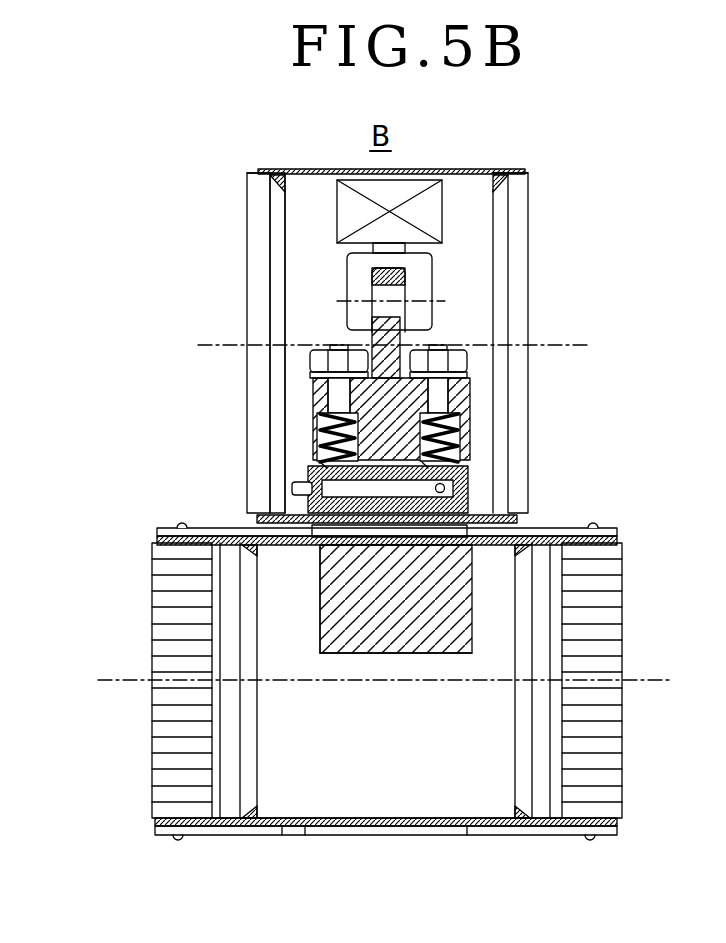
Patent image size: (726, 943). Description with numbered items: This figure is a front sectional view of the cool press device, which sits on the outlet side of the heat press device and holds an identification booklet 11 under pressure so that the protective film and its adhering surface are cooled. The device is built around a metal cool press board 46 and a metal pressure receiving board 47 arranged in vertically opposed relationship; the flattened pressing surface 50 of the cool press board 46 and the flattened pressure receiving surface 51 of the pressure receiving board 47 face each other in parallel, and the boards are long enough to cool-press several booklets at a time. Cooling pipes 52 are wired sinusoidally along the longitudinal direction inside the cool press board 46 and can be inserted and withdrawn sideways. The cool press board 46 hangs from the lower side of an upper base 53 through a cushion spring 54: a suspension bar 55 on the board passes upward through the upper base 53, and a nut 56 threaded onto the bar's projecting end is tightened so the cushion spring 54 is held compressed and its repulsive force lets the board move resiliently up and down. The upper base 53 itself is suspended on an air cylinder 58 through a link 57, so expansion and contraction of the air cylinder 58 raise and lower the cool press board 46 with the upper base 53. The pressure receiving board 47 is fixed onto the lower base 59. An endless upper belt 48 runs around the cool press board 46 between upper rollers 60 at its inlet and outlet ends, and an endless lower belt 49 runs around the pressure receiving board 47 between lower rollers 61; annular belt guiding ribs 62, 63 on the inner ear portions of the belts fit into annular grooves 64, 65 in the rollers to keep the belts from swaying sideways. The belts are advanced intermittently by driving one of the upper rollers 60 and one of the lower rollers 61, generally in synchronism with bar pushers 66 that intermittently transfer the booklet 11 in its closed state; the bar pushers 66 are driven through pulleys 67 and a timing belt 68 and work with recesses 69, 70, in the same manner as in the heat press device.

The identification booklet 11 is at (343, 630).
The cool press board 46 is at (470, 412).
The pressure receiving board 47 is at (418, 595).
The upper belt 48 is at (318, 171).
The lower belt 49 is at (490, 543).
The pressing surface 50 is at (470, 440).
The pressure receiving surface 51 is at (355, 578).
The cooling pipes 52 is at (473, 487).
The upper base 53 is at (335, 378).
The cushion spring 54 is at (322, 462).
The suspension bar 55 is at (322, 415).
The nut 56 is at (313, 352).
The link 57 is at (340, 290).
The air cylinder 58 is at (388, 242).
The lower base 59 is at (448, 642).
The upper rollers 60 is at (467, 198).
The lower rollers 61 is at (422, 777).
The annular belt guiding rib 62 is at (512, 188).
The annular belt guiding rib 63 is at (517, 540).
The annular groove 64 is at (502, 288).
The annular groove 65 is at (527, 627).
The bar pushers 66 is at (570, 527).
The pulleys 67 is at (168, 738).
The timing belt 68 is at (177, 815).
The recess 69 is at (347, 828).
The recess 70 is at (295, 545).